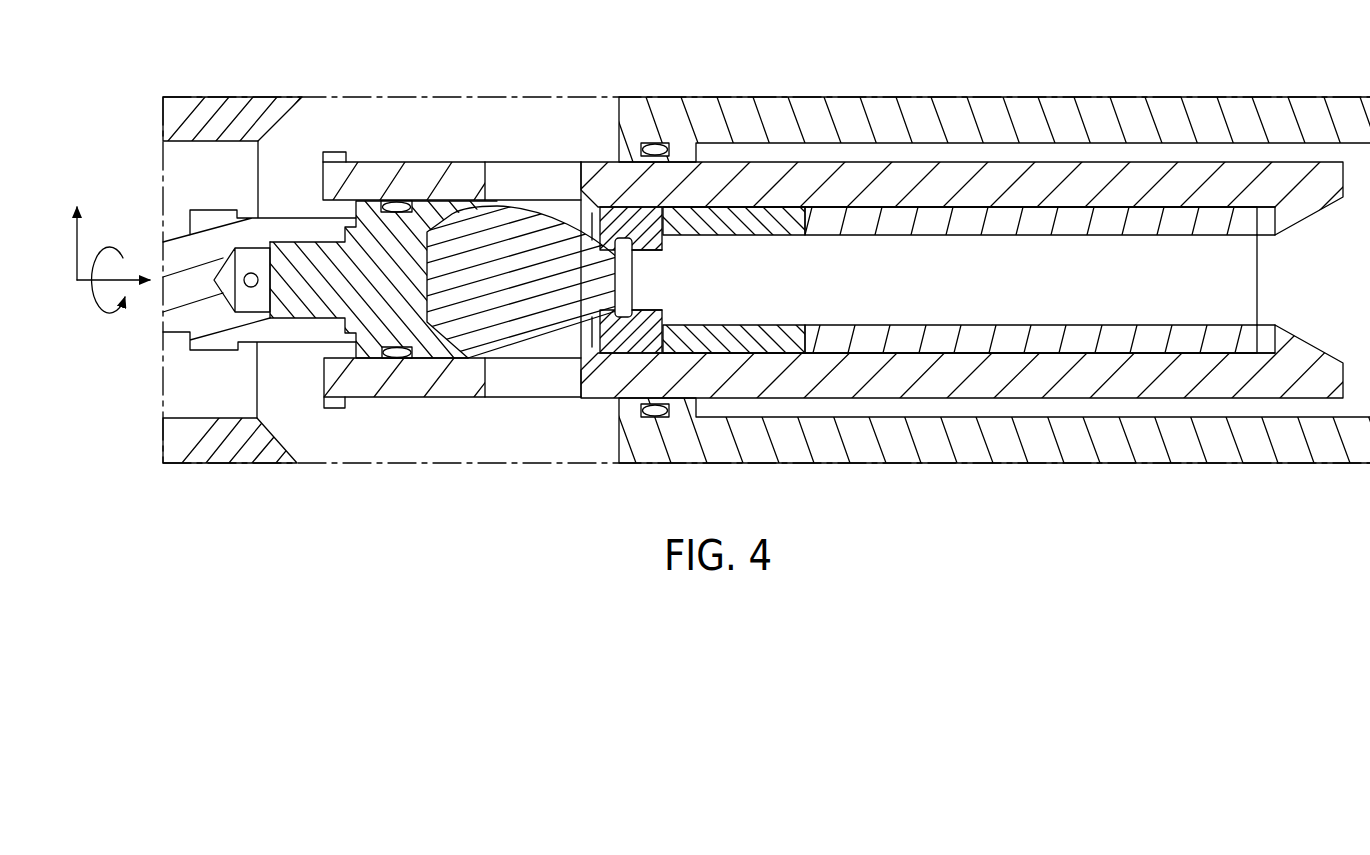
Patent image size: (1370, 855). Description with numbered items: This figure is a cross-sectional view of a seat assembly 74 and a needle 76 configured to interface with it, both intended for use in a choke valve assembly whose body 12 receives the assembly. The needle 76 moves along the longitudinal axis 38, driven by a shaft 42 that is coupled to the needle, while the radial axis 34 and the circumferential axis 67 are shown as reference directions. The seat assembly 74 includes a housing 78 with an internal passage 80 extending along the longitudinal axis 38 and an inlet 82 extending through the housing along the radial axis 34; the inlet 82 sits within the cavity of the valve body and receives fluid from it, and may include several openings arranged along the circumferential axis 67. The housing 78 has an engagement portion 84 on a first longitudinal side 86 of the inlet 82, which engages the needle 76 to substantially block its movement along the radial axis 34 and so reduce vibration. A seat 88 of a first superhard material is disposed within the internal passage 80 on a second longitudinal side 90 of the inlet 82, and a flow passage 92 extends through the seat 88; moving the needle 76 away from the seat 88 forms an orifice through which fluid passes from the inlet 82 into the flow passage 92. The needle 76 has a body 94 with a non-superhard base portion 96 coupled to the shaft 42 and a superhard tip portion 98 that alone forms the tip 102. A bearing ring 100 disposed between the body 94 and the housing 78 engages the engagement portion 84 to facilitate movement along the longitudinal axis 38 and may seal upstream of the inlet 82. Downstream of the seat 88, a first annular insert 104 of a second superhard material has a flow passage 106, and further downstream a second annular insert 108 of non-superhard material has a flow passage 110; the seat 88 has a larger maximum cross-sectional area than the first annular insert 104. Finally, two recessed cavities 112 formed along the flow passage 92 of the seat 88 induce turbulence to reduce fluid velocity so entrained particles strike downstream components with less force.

The body 12 is at (920, 118).
The radial axis 34 is at (77, 250).
The longitudinal axis 38 is at (90, 280).
The shaft 42 is at (183, 245).
The circumferential axis 67 is at (100, 310).
The seat assembly 74 is at (607, 150).
The needle 76 is at (468, 373).
The housing 78 is at (1098, 178).
The internal passage 80 is at (1219, 261).
The inlet 82 is at (522, 398).
The engagement portion 84 is at (383, 187).
The first longitudinal side 86 is at (437, 147).
The seat 88 is at (642, 217).
The second longitudinal side 90 is at (746, 261).
The flow passage 92 is at (652, 263).
The body 94 is at (373, 325).
The base portion 96 is at (383, 233).
The tip portion 98 is at (597, 260).
The bearing ring 100 is at (398, 355).
The tip 102 is at (663, 268).
The first annular insert 104 is at (755, 345).
The flow passage 106 is at (785, 202).
The second annular insert 108 is at (1048, 338).
The flow passage 110 is at (994, 271).
The recessed cavities 112 is at (533, 377).